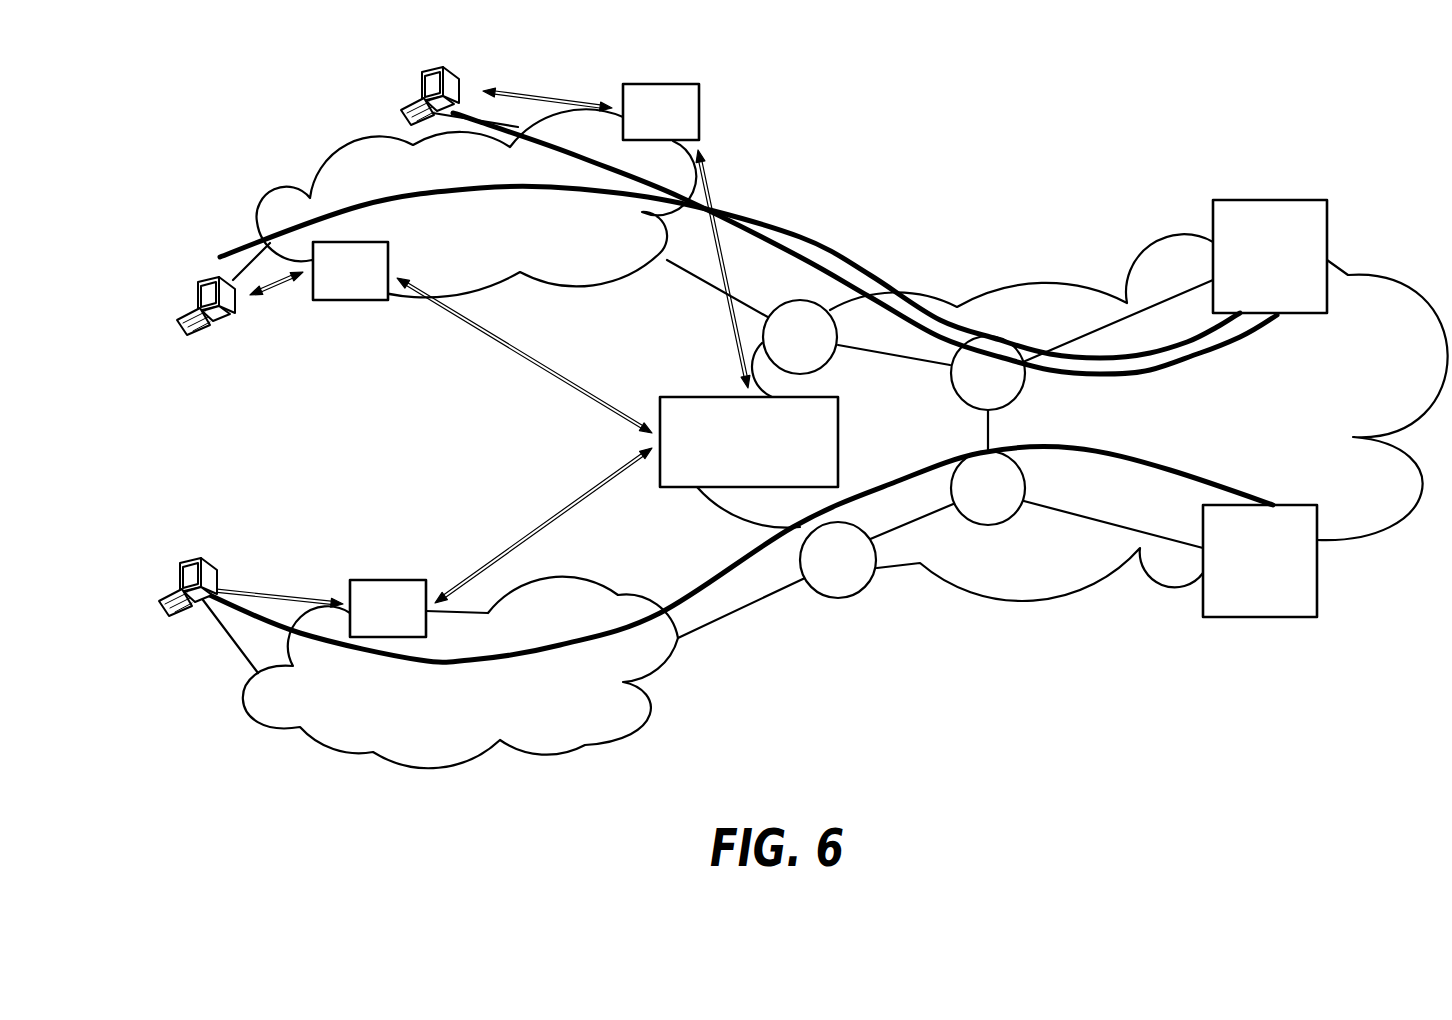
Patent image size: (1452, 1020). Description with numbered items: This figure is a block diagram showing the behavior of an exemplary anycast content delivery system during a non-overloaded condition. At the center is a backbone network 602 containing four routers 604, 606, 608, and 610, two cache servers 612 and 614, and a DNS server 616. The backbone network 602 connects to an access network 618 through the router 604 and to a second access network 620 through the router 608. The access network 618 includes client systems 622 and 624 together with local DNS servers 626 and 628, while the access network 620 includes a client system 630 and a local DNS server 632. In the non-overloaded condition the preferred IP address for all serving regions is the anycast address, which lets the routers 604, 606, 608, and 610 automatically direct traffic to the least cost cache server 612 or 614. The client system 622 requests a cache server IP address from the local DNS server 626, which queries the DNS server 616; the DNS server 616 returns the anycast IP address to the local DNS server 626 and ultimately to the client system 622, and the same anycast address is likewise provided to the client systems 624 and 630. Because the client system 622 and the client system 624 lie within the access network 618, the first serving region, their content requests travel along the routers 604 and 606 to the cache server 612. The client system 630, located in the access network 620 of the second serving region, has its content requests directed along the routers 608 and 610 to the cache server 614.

The backbone network 602 is at (1068, 283).
The router 604 is at (804, 300).
The router 606 is at (987, 335).
The router 608 is at (840, 599).
The router 610 is at (988, 526).
The cache server 612 is at (1270, 200).
The cache server 614 is at (1260, 618).
The DNS server 616 is at (745, 487).
The access network 618 is at (312, 148).
The access network 620 is at (457, 772).
The client system 622 is at (426, 70).
The client system 624 is at (205, 282).
The local DNS server 626 is at (662, 84).
The local DNS server 628 is at (350, 300).
The client system 630 is at (183, 558).
The local DNS server 632 is at (387, 580).